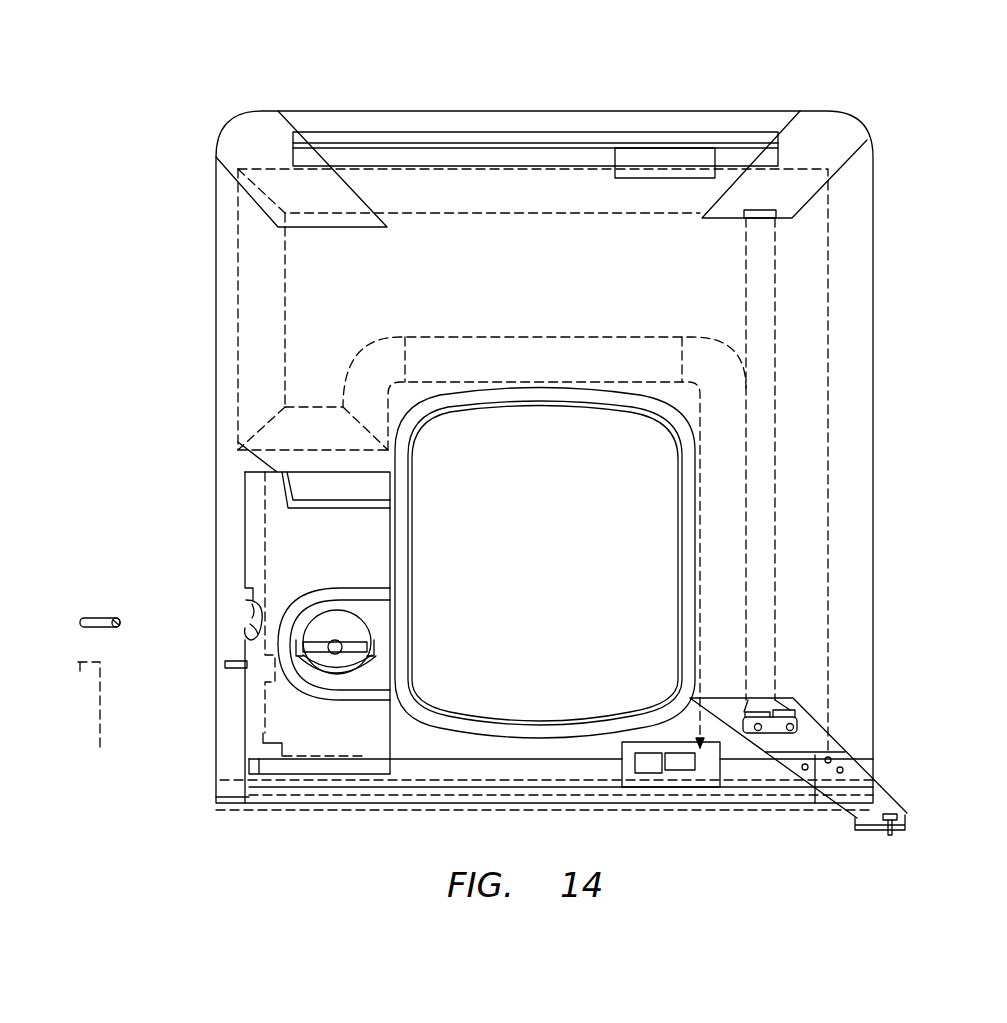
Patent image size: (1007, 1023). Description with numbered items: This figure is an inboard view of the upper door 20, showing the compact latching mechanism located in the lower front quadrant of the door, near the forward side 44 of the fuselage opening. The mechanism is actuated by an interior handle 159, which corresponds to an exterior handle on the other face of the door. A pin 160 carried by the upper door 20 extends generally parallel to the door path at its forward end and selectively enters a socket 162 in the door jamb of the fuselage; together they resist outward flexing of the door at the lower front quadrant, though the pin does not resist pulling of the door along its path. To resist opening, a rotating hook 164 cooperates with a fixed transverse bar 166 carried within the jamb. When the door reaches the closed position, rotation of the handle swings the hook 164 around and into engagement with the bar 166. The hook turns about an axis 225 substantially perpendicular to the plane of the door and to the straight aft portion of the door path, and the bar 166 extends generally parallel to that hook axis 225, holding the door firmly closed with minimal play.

The upper door 20 is at (568, 99).
The forward side 44 is at (102, 752).
The interior handle 159 is at (342, 677).
The pin 160 is at (233, 672).
The socket 162 is at (82, 673).
The rotating hook 164 is at (247, 605).
The fixed transverse bar 166 is at (113, 618).
The hook axis 225 is at (248, 623).